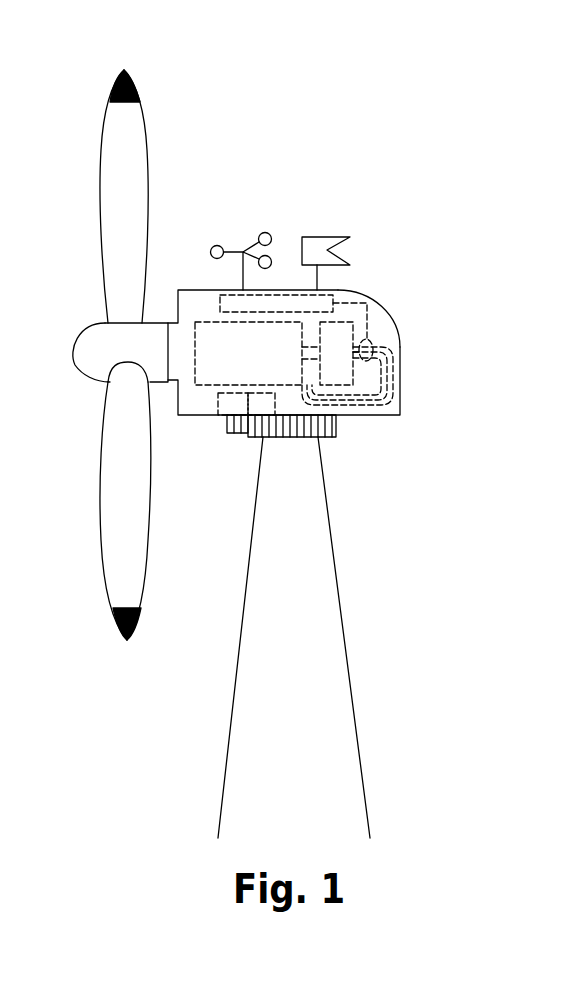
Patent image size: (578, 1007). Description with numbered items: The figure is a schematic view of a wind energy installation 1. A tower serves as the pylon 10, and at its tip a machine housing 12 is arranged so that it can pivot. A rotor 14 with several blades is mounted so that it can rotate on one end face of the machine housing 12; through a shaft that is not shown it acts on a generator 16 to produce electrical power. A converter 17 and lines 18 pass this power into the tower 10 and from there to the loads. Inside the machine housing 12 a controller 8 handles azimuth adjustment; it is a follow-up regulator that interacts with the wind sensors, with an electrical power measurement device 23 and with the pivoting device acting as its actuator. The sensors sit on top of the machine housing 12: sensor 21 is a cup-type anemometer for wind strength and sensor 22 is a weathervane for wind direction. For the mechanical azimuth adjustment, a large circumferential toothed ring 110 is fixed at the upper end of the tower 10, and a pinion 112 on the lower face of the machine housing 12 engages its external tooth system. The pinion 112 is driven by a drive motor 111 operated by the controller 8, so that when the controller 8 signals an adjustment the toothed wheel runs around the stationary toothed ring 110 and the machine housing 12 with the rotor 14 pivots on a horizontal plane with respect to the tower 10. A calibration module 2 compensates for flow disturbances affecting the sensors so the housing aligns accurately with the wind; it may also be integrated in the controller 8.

The wind power plant 1 is at (275, 160).
The calibration module 2 is at (350, 291).
The controller 8 is at (265, 398).
The tower 10 is at (342, 695).
The machine housing 12 is at (382, 312).
The rotor 14 is at (76, 348).
The generator 16 is at (203, 314).
The converter 17 is at (355, 330).
The lines 18 is at (393, 387).
The sensor 21 is at (238, 251).
The sensor 22 is at (331, 236).
The electrical power measurement device 23 is at (373, 345).
The toothed ring 110 is at (337, 428).
The drive motor 111 is at (225, 398).
The pinion 112 is at (238, 432).